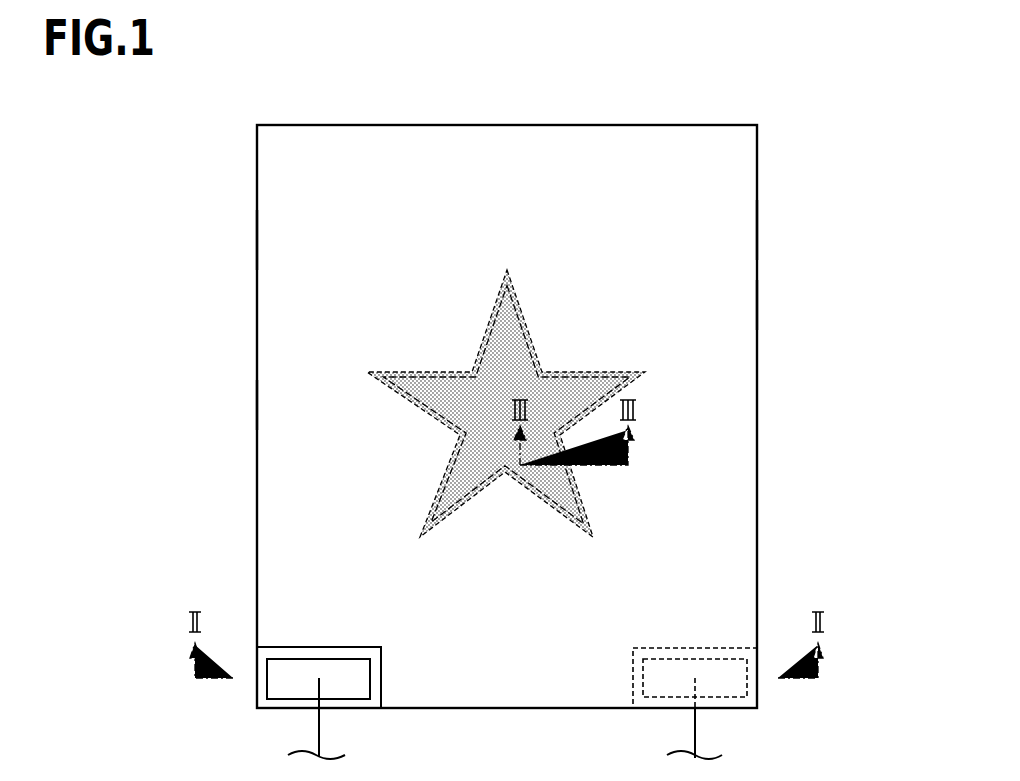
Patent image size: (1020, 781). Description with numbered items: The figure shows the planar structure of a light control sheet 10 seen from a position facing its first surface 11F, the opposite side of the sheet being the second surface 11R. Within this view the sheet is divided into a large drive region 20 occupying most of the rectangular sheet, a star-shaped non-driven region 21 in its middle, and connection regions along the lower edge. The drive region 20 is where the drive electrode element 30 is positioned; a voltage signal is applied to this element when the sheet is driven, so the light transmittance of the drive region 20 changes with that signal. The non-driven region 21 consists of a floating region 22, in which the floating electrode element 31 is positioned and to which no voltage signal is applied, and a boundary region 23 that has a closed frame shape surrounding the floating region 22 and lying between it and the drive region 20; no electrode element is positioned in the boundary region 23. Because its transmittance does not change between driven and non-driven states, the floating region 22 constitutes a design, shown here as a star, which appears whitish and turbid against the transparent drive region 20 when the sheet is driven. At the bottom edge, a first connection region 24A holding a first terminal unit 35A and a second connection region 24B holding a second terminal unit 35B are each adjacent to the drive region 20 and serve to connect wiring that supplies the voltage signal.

The light control sheet 10 is at (757, 168).
The first surface 11F is at (718, 227).
The second surface 11R is at (757, 303).
The drive region 20 is at (282, 240).
The non-driven region 21 is at (501, 452).
The floating region 22 is at (485, 490).
The boundary region 23 is at (443, 518).
The first connection region 24A is at (753, 712).
The second connection region 24B is at (260, 712).
The drive electrode element 30 is at (282, 402).
The floating electrode element 31 is at (410, 410).
The first terminal unit 35A is at (662, 683).
The second terminal unit 35B is at (347, 683).